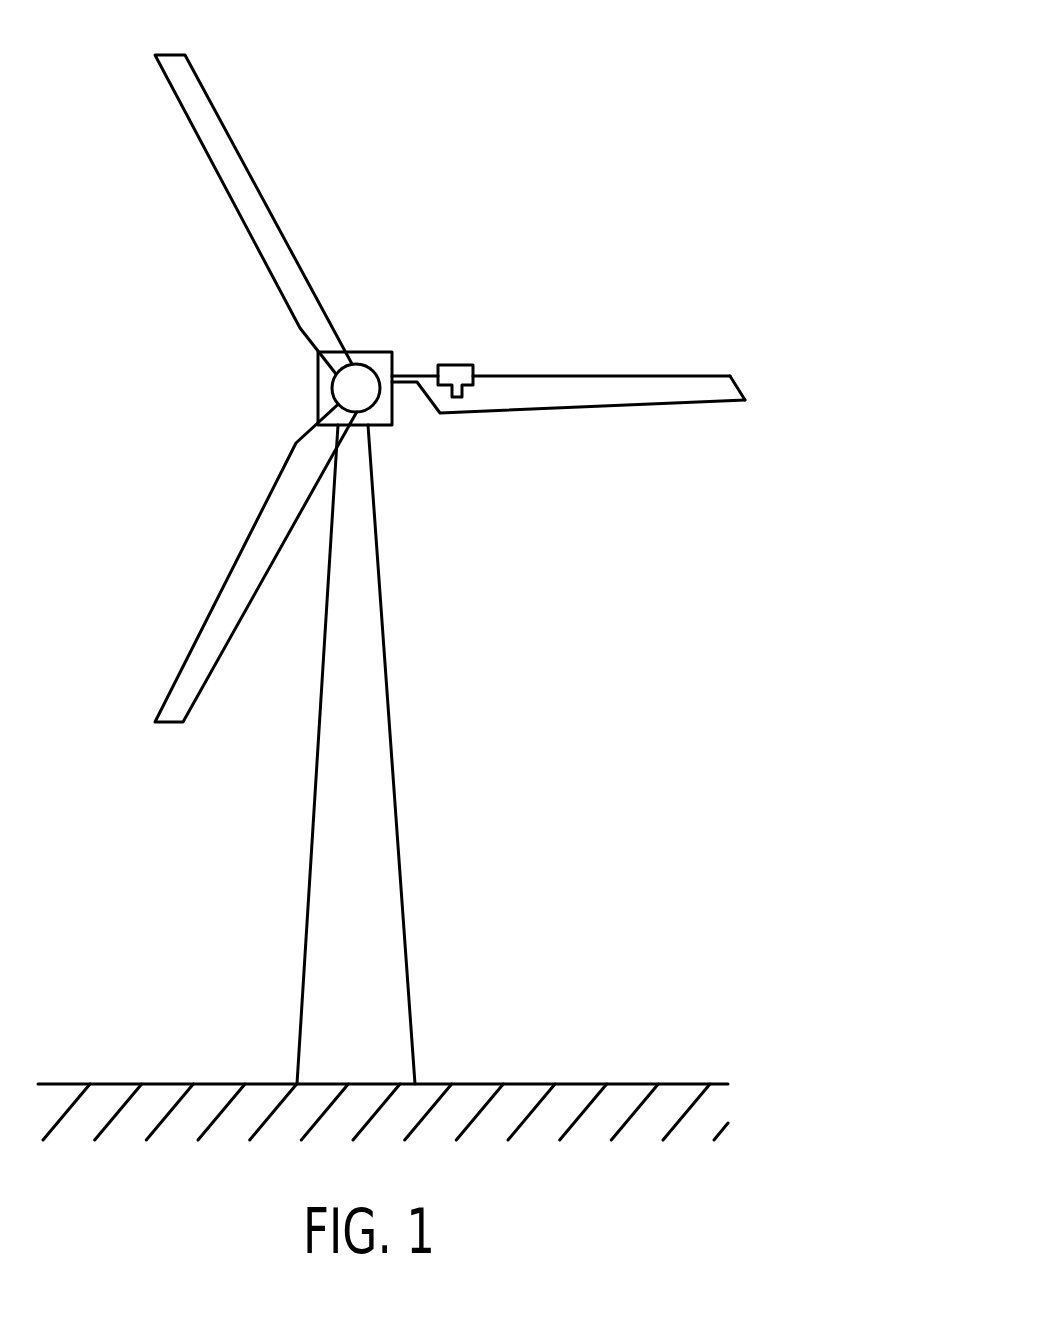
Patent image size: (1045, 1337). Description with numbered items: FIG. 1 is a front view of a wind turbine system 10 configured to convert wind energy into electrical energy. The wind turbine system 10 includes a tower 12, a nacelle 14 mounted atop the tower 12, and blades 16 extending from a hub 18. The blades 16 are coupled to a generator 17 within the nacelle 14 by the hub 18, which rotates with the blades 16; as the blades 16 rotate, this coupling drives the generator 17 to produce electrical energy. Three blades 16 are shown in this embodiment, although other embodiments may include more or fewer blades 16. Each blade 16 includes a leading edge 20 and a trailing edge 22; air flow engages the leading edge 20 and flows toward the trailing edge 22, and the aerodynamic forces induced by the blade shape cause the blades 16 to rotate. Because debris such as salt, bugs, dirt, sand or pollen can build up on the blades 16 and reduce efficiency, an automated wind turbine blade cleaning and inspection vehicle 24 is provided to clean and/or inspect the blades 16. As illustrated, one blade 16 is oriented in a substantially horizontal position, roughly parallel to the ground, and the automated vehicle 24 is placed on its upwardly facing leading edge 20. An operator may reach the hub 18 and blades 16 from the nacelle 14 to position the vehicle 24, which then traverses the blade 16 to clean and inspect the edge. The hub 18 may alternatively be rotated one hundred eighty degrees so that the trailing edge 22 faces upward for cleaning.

The wind turbine system 10 is at (478, 172).
The tower 12 is at (392, 750).
The nacelle 14 is at (370, 353).
The blades 16 is at (450, 388).
The generator 17 is at (377, 360).
The hub 18 is at (343, 390).
The leading edge 20 is at (603, 375).
The trailing edge 22 is at (595, 407).
The automated wind turbine blade cleaning and inspection vehicle 24 is at (455, 365).